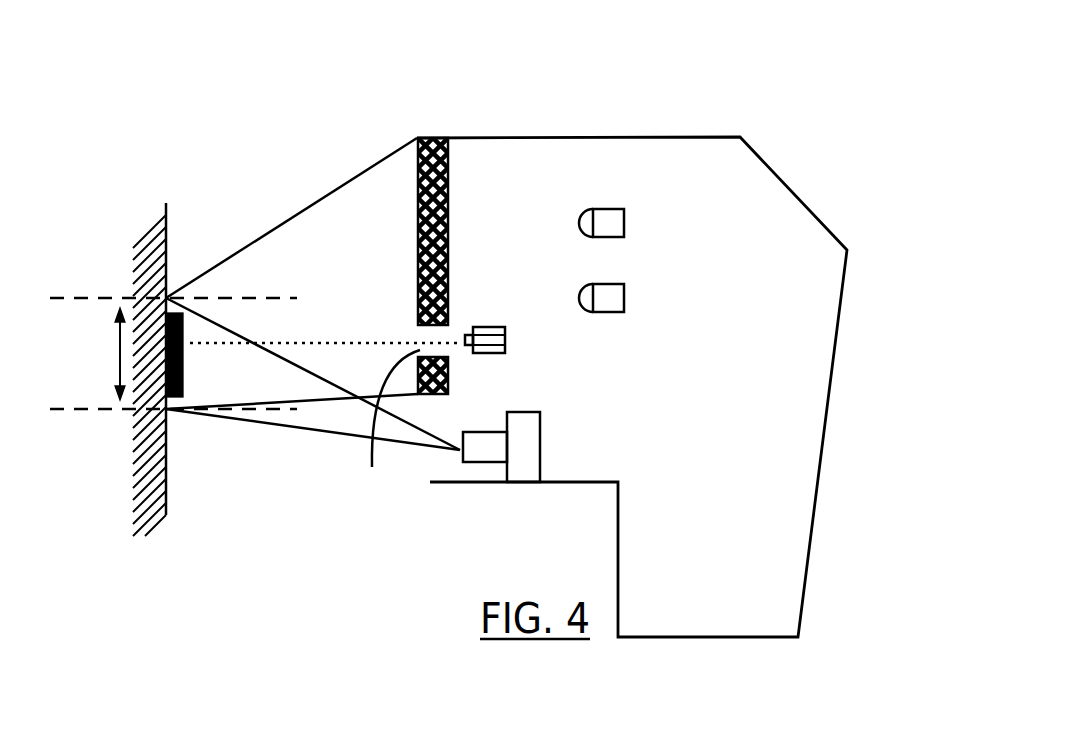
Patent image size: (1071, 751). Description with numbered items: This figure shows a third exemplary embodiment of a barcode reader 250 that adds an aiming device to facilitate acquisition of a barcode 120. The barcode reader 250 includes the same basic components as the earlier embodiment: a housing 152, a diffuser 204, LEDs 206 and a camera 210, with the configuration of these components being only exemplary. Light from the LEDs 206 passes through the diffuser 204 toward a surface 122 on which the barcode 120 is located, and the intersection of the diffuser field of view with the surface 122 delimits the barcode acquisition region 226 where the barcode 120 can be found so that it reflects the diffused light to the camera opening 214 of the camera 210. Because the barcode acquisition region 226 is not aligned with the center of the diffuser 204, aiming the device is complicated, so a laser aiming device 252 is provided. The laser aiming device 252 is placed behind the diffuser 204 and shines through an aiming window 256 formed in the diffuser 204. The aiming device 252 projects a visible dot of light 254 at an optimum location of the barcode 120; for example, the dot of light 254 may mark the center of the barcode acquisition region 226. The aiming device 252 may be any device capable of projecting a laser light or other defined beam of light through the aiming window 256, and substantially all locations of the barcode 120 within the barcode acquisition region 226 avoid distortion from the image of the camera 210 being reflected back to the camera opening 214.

The barcode reader 250 is at (813, 92).
The housing 152 is at (790, 188).
The diffuser 204 is at (418, 208).
The LEDs 206 is at (609, 209).
The laser aiming device 252 is at (478, 327).
The camera 210 is at (540, 418).
The camera opening 214 is at (460, 450).
The aiming window 256 is at (386, 426).
The dot of light 254 is at (185, 345).
The barcode 120 is at (184, 380).
The surface 122 is at (166, 497).
The barcode acquisition region 226 is at (120, 348).